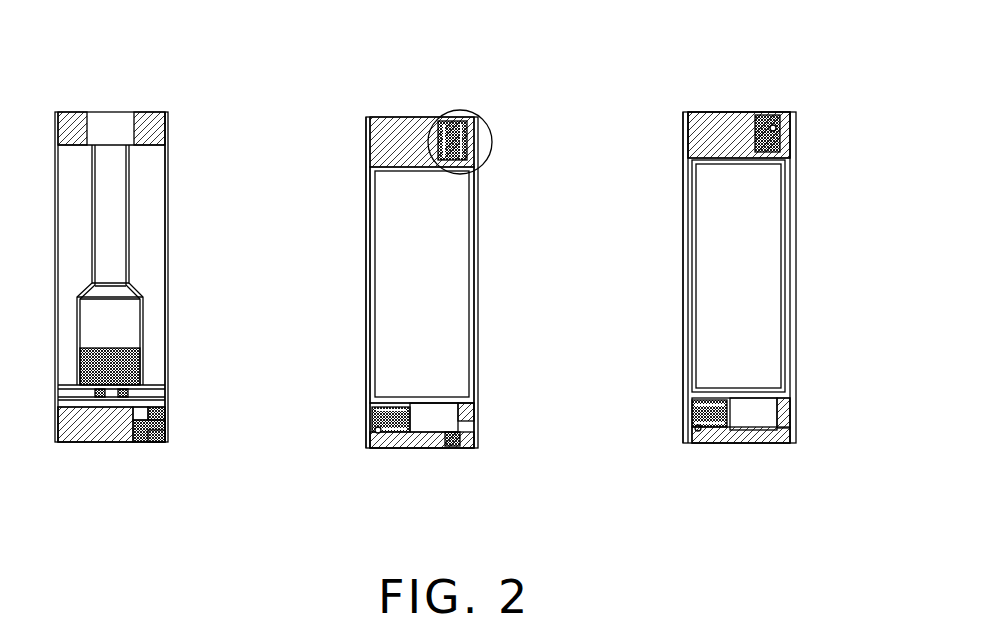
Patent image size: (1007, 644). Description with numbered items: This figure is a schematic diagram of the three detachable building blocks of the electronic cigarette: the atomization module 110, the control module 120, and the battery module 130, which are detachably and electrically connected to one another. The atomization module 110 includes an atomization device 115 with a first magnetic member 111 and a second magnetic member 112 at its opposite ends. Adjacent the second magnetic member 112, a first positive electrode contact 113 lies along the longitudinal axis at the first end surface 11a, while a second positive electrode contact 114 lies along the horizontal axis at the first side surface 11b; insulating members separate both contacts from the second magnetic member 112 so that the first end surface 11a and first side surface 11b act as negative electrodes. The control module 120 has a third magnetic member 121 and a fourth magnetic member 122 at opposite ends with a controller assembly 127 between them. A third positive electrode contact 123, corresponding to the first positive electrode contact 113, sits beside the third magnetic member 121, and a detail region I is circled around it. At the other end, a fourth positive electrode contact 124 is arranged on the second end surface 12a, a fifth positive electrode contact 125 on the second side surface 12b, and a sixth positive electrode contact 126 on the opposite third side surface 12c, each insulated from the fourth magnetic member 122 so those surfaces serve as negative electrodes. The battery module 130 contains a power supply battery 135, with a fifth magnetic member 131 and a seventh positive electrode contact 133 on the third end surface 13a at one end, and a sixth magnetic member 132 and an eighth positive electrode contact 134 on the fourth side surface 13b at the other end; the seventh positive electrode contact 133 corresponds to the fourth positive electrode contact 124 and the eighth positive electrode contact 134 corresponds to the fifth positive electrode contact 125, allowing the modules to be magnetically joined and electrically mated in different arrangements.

The atomization module 110 is at (136, 74).
The first magnetic member 111 is at (162, 128).
The first side surface 11b is at (166, 210).
The atomization device 115 is at (122, 332).
The first end surface 11a is at (97, 442).
The second positive electrode contact 114 is at (165, 412).
The second magnetic member 112 is at (168, 432).
The first positive electrode contact 113 is at (152, 444).
The control module 120 is at (447, 46).
The third magnetic member 121 is at (410, 132).
The third positive electrode contact 123 is at (462, 120).
The enlarged detail region I is at (488, 152).
The controller assembly 127 is at (462, 285).
The third side surface 12c is at (366, 295).
The second side surface 12b is at (478, 318).
The fourth magnetic member 122 is at (478, 438).
The second end surface 12a is at (410, 448).
The sixth positive electrode contact 126 is at (372, 420).
The fifth positive electrode contact 125 is at (476, 412).
The fourth positive electrode contact 124 is at (455, 446).
The battery module 130 is at (788, 38).
The fifth magnetic member 131 is at (703, 128).
The third end surface 13a is at (730, 110).
The seventh positive electrode contact 133 is at (788, 122).
The fourth side surface 13b is at (683, 232).
The power supply battery 135 is at (775, 243).
The sixth magnetic member 132 is at (790, 432).
The eighth positive electrode contact 134 is at (690, 412).